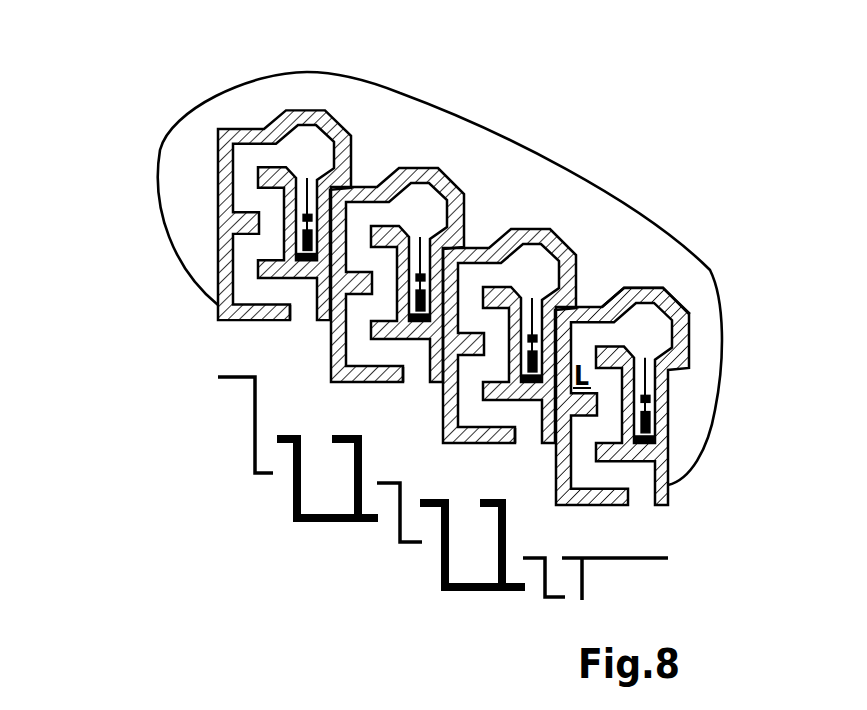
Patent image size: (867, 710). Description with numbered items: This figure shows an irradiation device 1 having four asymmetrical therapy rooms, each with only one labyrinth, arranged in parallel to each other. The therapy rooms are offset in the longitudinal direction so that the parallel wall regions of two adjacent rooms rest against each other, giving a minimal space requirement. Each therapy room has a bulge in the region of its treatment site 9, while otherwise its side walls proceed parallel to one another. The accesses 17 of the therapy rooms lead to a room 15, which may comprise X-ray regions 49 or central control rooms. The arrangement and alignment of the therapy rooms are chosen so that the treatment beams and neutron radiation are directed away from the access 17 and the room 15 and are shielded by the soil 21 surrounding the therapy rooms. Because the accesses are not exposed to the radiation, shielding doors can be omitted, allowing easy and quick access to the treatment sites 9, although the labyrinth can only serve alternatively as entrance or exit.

The irradiation device 1 is at (602, 148).
The treatment site 9 is at (652, 300).
The room 15 is at (438, 483).
The access 17 is at (304, 314).
The soil 21 is at (497, 182).
The X-ray region 49 is at (447, 562).